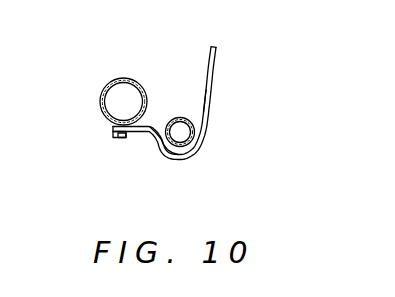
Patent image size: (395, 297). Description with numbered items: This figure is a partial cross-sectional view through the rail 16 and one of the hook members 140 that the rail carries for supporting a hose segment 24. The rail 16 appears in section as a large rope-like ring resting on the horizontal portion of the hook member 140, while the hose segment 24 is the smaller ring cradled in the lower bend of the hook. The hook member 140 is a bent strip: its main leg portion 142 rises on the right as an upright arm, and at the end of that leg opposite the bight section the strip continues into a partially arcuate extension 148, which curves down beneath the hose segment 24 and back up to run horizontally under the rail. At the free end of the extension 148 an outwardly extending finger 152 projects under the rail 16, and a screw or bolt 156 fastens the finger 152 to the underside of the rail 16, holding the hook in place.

The rail 16 is at (128, 77).
The hose segment 24 is at (183, 117).
The hook member 140 is at (196, 54).
The leg portion 142 is at (210, 118).
The partially arcuate extension 148 is at (152, 135).
The finger 152 is at (114, 128).
The screw or bolt 156 is at (121, 138).